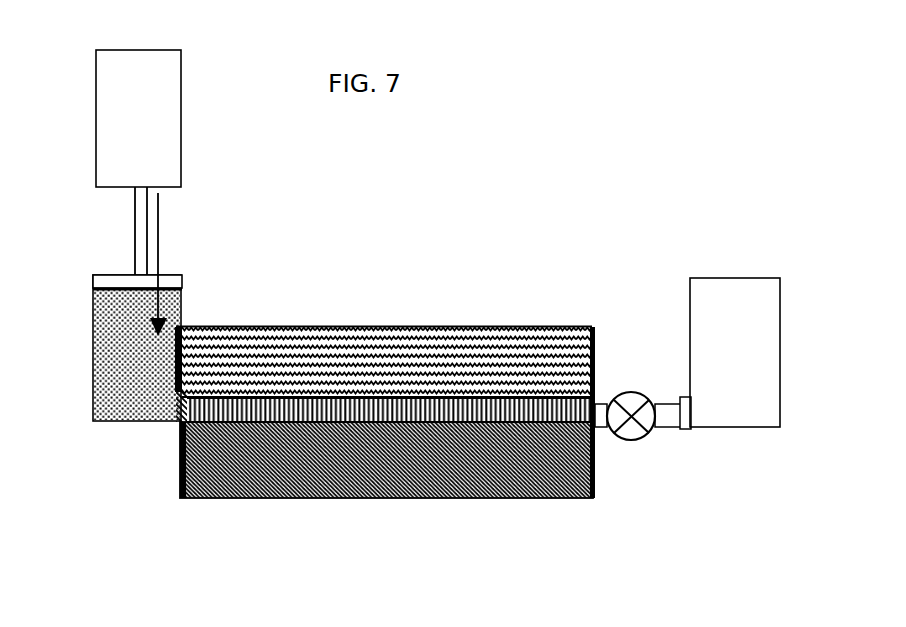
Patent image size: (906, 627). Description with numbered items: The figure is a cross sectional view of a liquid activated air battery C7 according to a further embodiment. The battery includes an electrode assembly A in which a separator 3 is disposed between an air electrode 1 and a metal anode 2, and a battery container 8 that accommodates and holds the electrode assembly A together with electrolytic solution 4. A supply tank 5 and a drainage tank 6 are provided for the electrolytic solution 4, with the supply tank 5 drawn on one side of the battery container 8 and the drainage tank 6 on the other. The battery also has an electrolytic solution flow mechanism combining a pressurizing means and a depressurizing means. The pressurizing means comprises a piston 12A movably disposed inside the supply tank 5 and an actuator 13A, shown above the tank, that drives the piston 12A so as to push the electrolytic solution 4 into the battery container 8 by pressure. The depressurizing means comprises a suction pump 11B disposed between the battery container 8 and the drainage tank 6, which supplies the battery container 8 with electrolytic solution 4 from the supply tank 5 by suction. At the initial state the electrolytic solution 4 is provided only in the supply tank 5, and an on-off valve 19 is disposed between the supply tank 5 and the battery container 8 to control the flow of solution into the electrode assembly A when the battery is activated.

The liquid activated air battery C7 is at (500, 283).
The actuator 13A is at (112, 83).
The piston 12A is at (110, 282).
The supply tank 5 is at (92, 358).
The electrolytic solution 4 is at (132, 393).
The on-off valve 19 is at (177, 422).
The air electrode 1 is at (287, 340).
The electrode assembly A is at (354, 326).
The separator 3 is at (460, 400).
The metal anode 2 is at (288, 473).
The battery container 8 is at (595, 344).
The suction pump 11B is at (648, 441).
The drainage tank 6 is at (712, 291).